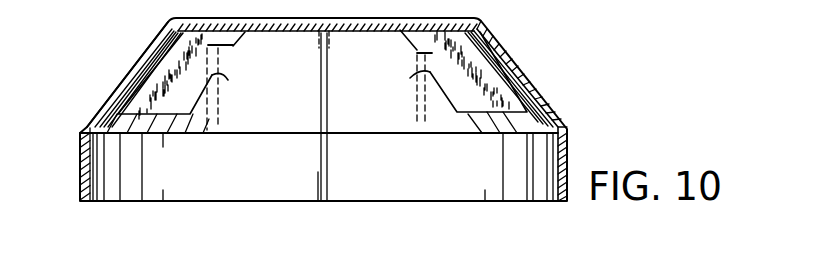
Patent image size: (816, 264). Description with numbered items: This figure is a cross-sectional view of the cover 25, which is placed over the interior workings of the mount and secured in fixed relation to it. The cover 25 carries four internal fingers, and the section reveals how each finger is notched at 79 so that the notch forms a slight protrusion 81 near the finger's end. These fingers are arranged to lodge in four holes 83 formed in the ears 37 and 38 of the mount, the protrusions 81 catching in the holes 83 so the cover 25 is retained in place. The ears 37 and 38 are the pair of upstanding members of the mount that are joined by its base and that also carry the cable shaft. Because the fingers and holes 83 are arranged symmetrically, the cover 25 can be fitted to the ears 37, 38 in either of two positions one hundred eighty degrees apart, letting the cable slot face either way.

The cover 25 is at (323, 135).
The ear 37 is at (217, 128).
The ear 38 is at (436, 122).
The notch 79 is at (222, 50).
The protrusion 81 is at (228, 80).
The hole 83 is at (214, 102).